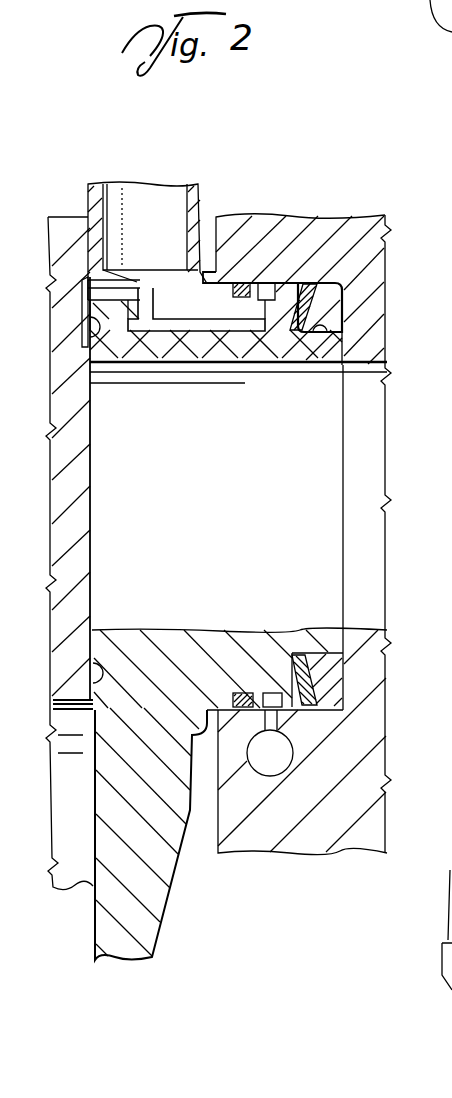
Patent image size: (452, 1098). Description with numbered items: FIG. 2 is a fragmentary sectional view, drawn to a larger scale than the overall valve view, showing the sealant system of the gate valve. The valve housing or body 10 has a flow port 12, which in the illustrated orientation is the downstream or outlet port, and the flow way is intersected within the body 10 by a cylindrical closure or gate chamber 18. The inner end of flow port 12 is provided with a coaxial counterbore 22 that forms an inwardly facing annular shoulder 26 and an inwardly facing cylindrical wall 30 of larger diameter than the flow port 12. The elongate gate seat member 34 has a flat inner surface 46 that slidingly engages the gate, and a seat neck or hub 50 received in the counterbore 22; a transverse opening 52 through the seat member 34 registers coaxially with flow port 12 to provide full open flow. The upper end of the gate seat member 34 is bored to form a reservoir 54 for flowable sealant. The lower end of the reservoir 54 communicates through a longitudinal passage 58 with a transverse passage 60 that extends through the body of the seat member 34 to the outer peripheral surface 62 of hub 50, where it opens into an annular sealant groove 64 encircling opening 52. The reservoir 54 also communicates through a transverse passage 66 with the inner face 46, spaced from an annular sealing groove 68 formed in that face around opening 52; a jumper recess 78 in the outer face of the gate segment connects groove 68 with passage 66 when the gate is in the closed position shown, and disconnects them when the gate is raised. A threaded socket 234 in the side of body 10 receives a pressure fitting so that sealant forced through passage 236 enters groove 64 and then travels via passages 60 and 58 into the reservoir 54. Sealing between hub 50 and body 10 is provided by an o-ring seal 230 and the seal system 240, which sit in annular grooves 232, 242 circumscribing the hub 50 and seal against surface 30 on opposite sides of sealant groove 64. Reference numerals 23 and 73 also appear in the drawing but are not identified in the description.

The valve housing or body 10 is at (262, 203).
The flow port 12 is at (370, 510).
The cylindrical closure or gate chamber 18 is at (214, 221).
The counterbore 22 is at (328, 348).
The inner sleeve 23 is at (187, 340).
The inwardly facing annular shoulder 26 is at (333, 362).
The inwardly facing cylindrical wall 30 is at (277, 340).
The gate seat member 34 is at (168, 915).
The inner surface 46 is at (88, 190).
The seat neck or hub 50 is at (333, 347).
The transverse opening 52 is at (233, 340).
The reservoir 54 is at (117, 197).
The longitudinal passage 58 is at (145, 295).
The transverse passage 60 is at (130, 362).
The outer peripheral surface 62 is at (278, 335).
The annular sealant groove 64 is at (268, 283).
The transverse passage 66 is at (112, 292).
The annular sealing groove 68 is at (82, 327).
The bore 73 is at (93, 508).
The jumper recess 78 is at (77, 288).
The seal 230 is at (240, 283).
The annular groove 232 is at (210, 340).
The threaded socket 234 is at (285, 747).
The passage 236 is at (273, 720).
The seal system 240 is at (343, 292).
The annular groove 242 is at (310, 338).